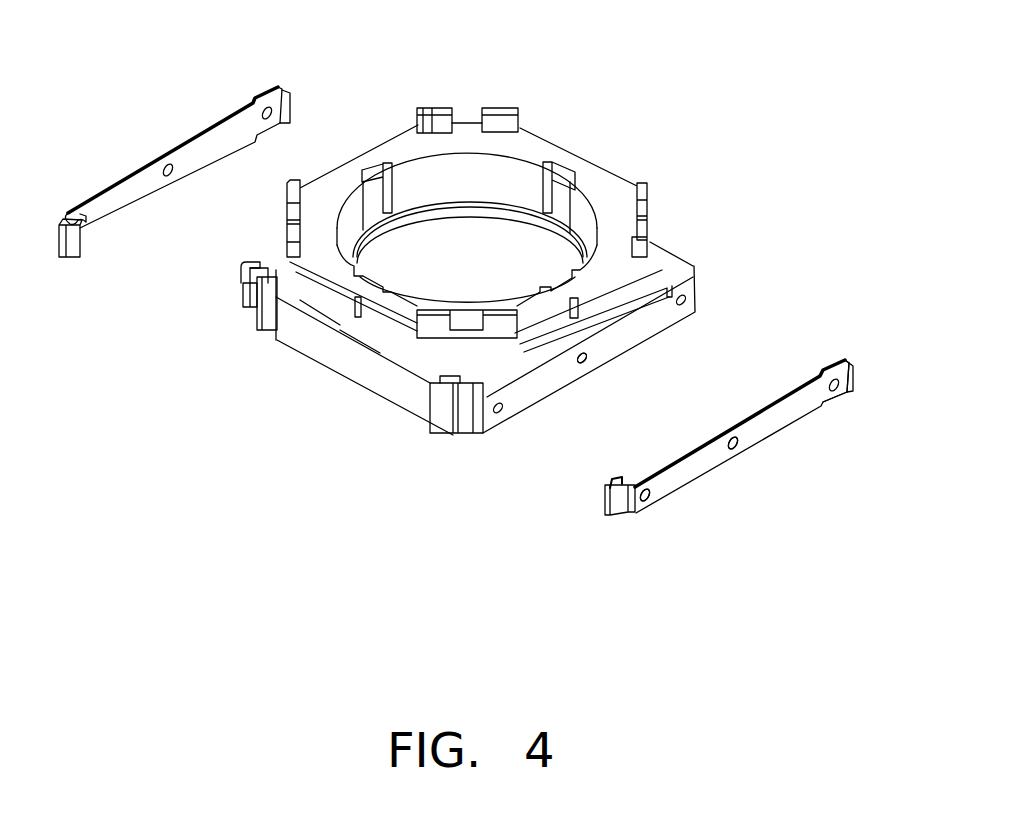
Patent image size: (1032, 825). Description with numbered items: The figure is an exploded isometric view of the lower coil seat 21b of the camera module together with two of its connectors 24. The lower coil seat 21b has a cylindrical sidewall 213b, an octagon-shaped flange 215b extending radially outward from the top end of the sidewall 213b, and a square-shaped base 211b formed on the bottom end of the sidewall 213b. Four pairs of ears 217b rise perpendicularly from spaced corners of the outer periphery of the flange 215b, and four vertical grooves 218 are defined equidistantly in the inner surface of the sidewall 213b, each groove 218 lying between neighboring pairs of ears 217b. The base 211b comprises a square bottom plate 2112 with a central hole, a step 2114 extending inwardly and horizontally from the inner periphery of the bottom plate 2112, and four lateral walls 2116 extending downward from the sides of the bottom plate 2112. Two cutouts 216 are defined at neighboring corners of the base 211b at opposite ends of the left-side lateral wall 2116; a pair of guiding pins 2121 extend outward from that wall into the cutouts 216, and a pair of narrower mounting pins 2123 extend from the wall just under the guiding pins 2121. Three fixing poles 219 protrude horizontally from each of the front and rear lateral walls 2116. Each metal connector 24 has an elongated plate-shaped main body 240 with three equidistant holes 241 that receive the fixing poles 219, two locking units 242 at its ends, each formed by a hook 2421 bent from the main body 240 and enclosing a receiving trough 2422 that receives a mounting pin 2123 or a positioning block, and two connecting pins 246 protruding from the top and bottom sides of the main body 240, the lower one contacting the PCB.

The connector 24 is at (483, 341).
The lower coil seat 21b is at (483, 242).
The base 211b is at (483, 325).
The sidewall 213b is at (520, 183).
The flange 215b is at (612, 210).
The ears 217b is at (494, 125).
The grooves 218 is at (375, 197).
The fixing poles 219 is at (583, 362).
The guiding pins 2121 is at (244, 272).
The mounting pins 2123 is at (247, 297).
The cutouts 216 is at (268, 308).
The step 2114 is at (345, 245).
The bottom plate 2112 is at (358, 332).
The lateral walls 2116 is at (440, 380).
The main body 240 is at (753, 432).
The holes 241 is at (652, 501).
The locking units 242 is at (478, 464).
The hook 2421 is at (610, 507).
The receiving trough 2422 is at (612, 482).
The connecting pins 246 is at (835, 393).